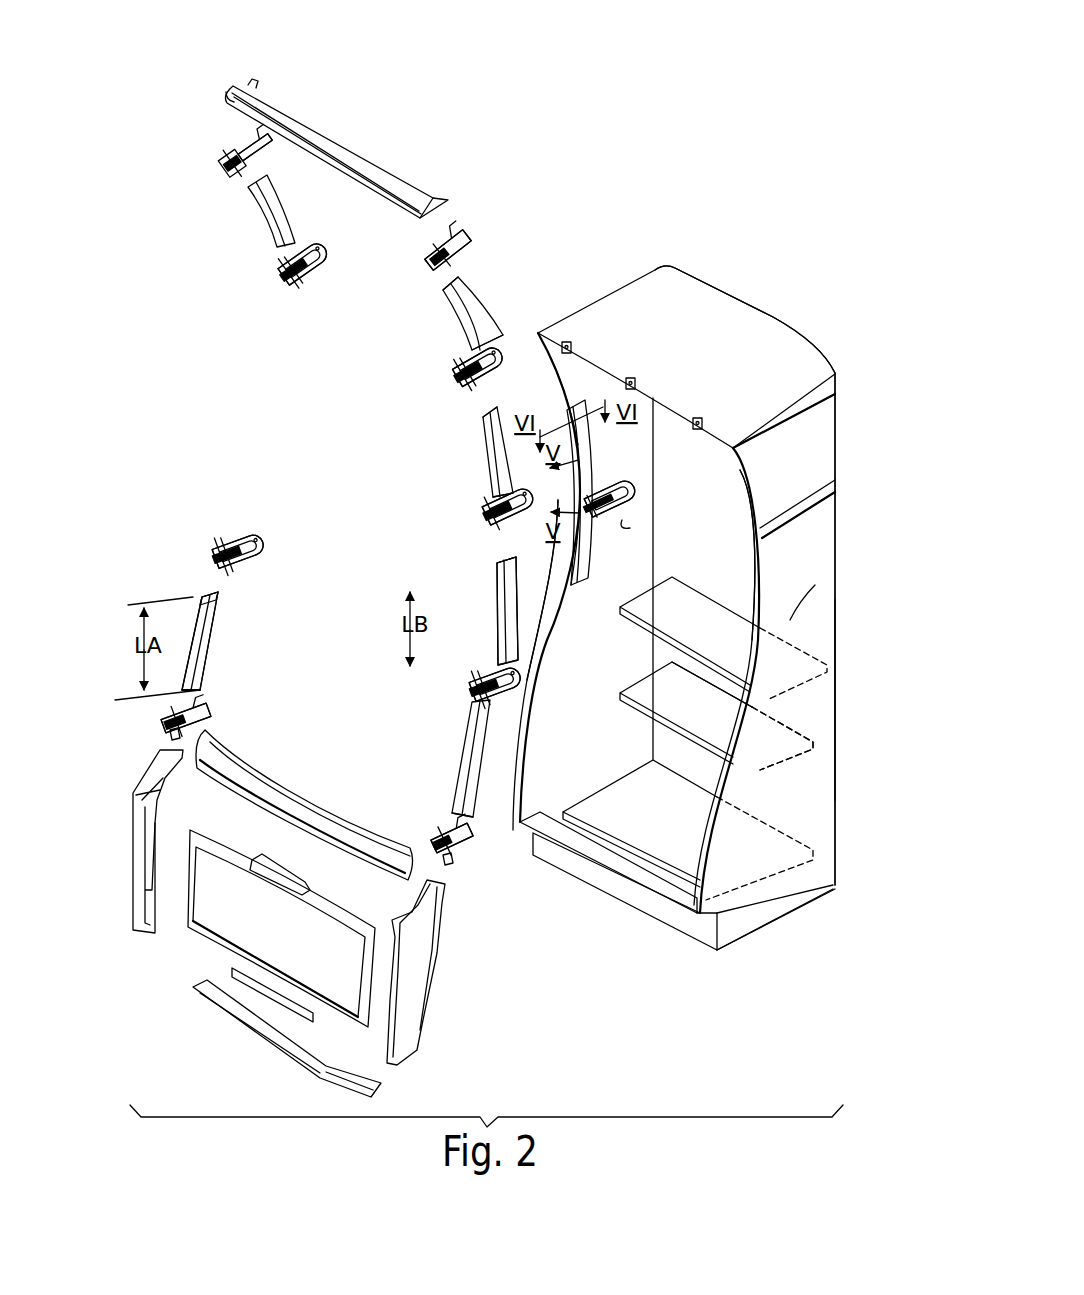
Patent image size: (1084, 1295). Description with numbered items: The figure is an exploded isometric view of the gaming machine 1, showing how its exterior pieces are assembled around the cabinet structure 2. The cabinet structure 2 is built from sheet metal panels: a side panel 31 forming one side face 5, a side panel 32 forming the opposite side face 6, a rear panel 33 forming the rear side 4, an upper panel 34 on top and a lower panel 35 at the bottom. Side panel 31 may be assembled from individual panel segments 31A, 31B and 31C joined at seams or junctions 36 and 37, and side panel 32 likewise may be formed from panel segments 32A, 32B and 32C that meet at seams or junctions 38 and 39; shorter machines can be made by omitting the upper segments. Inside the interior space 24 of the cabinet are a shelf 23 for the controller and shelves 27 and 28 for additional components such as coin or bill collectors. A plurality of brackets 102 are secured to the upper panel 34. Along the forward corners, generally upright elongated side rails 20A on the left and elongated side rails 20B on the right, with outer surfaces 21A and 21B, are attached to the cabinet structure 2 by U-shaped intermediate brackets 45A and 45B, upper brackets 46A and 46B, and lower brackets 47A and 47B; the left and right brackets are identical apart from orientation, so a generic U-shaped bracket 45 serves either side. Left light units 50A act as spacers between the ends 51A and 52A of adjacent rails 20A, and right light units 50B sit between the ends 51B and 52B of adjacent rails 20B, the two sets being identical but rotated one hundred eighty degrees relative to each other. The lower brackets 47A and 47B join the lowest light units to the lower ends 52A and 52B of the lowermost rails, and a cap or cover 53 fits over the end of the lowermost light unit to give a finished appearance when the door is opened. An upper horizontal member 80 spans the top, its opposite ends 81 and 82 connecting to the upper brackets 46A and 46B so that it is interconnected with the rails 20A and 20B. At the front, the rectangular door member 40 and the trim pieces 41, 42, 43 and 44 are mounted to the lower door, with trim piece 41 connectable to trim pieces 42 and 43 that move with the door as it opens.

The gaming machine 1 is at (620, 163).
The cabinet structure 2 is at (835, 537).
The rear side 4 is at (837, 618).
The side face 5 is at (507, 830).
The side face 6 is at (820, 720).
The elongated side rails 20A is at (590, 403).
The elongated side rails 20B is at (453, 322).
The outer surfaces 21A is at (198, 613).
The outer surfaces 21B is at (493, 590).
The shelf 23 is at (670, 637).
The interior space 24 is at (697, 770).
The shelf 27 is at (637, 710).
The shelf 28 is at (610, 840).
The side panel 31 is at (548, 613).
The panel segment 31A is at (570, 780).
The panel segment 31B is at (613, 540).
The panel segment 31C is at (585, 382).
The side panel 32 is at (820, 681).
The panel segment 32A is at (822, 833).
The panel segment 32B is at (815, 561).
The panel segment 32C is at (822, 453).
The rear panel 33 is at (648, 585).
The upper panel 34 is at (735, 332).
The lower panel 35 is at (663, 873).
The seam or junction 36 is at (627, 523).
The seam or junction 37 is at (570, 568).
The seam or junction 38 is at (817, 497).
The seam or junction 39 is at (815, 585).
The rectangular door member 40 is at (197, 930).
The trim piece 41 is at (237, 808).
The trim piece 42 is at (130, 897).
The trim piece 43 is at (427, 1003).
The trim piece 44 is at (212, 1017).
The U-shaped bracket 45 is at (597, 497).
The U-shaped intermediate brackets 45A is at (320, 267).
The U-shaped intermediate brackets 45B is at (478, 400).
The upper brackets 46A is at (233, 170).
The upper brackets 46B is at (458, 263).
The lower brackets 47A is at (227, 703).
The lower brackets 47B is at (437, 837).
The left light units 50A is at (223, 165).
The right light units 50B is at (430, 272).
The end 51A is at (222, 597).
The end 51B is at (443, 290).
The end 52A is at (203, 690).
The end 52B is at (487, 345).
The cap or cover 53 is at (162, 728).
The upper horizontal member 80 is at (353, 142).
The end 81 is at (228, 92).
The end 82 is at (448, 200).
The brackets 102 is at (571, 342).